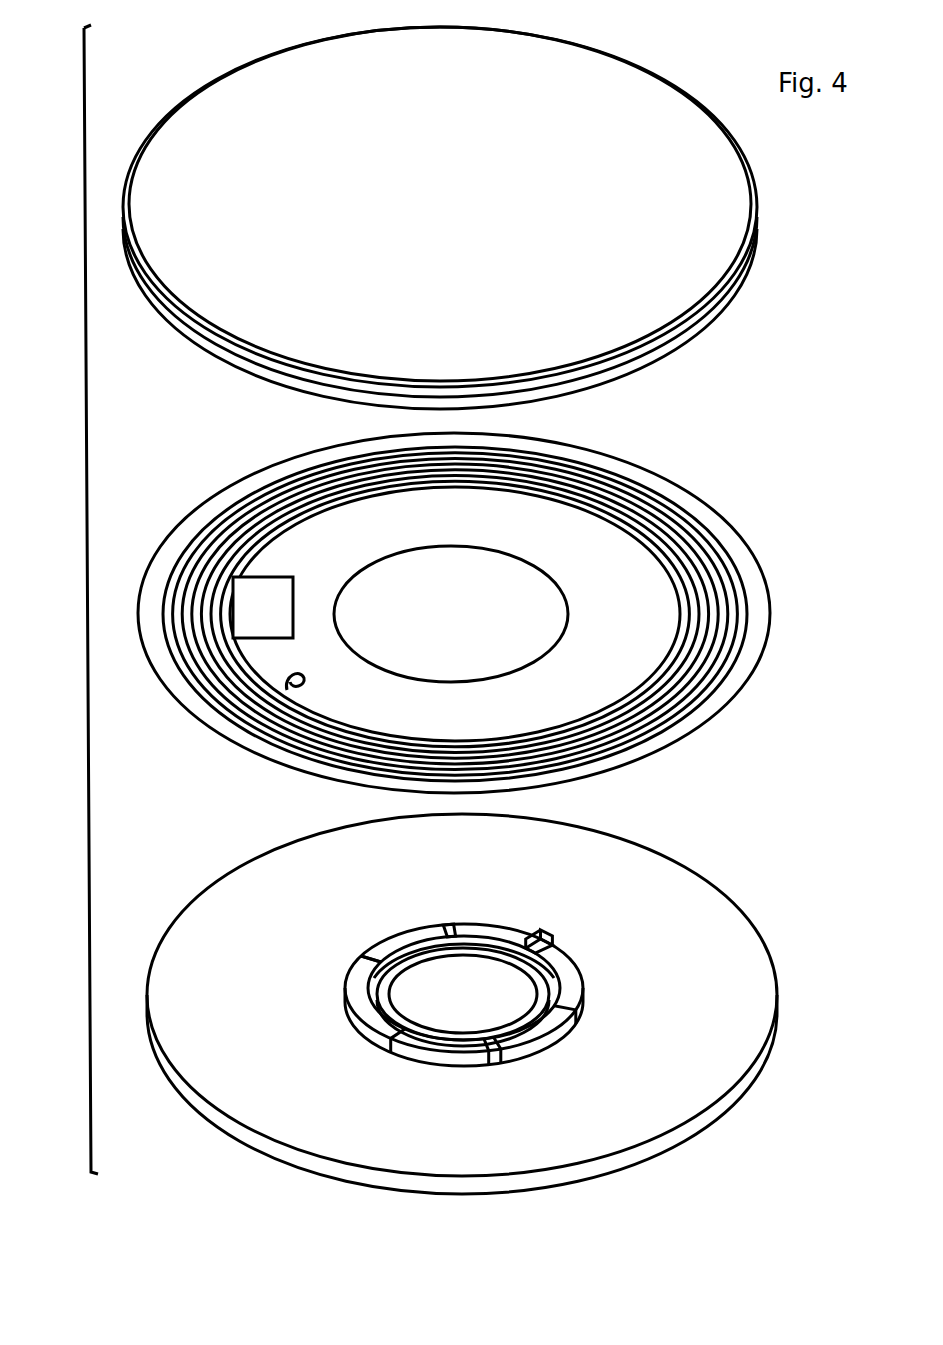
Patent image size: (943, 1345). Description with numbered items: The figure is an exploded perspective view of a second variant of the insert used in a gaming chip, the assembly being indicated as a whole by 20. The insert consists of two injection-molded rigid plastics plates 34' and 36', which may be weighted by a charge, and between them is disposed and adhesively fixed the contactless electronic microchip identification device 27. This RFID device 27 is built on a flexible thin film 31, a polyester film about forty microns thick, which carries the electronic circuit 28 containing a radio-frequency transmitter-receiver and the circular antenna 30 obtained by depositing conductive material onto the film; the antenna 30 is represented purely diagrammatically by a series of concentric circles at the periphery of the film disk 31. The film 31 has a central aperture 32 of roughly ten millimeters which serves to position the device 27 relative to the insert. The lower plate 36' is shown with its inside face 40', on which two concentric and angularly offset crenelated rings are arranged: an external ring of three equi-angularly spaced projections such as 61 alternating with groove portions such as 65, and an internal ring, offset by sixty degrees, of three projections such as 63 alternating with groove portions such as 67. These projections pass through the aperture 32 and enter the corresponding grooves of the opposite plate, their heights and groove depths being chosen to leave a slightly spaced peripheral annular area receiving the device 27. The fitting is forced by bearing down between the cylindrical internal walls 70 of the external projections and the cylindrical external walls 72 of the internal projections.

The medical implant assembly 20 is at (82, 72).
The plate 34' is at (440, 218).
The contactless electronic microchip identification device 27 is at (742, 505).
The electronic circuit 28 is at (265, 576).
The circular antenna 30 is at (268, 740).
The thin film 31 is at (470, 725).
The central aperture 32 is at (540, 571).
The inside face 40' is at (462, 1004).
The plate 36' is at (464, 1085).
The central projection 61 is at (393, 932).
The central projection 63 is at (492, 1028).
The groove portion 65 is at (350, 1012).
The groove portion 67 is at (536, 975).
The cylindrical internal wall 70 is at (441, 934).
The cylindrical external wall 72 is at (506, 1050).